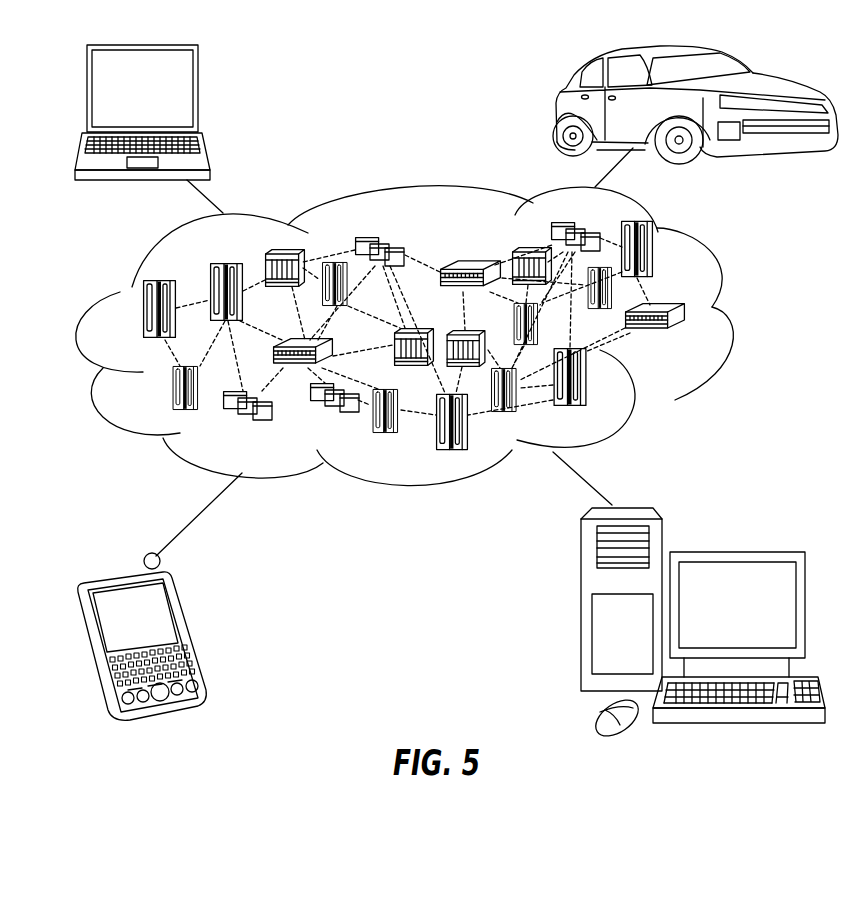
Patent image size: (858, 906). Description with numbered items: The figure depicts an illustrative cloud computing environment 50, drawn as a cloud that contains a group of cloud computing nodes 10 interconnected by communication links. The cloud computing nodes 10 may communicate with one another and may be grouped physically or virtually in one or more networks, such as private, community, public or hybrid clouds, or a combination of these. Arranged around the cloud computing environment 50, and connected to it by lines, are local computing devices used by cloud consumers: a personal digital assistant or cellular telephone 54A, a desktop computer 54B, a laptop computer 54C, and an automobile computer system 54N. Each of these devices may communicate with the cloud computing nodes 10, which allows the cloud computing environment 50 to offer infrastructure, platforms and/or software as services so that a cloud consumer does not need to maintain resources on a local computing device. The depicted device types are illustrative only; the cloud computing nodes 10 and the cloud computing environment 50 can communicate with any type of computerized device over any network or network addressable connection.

The cloud computing nodes 10 is at (690, 341).
The cloud computing environment 50 is at (737, 320).
The personal digital assistant or cellular telephone 54A is at (192, 630).
The desktop computer 54B is at (733, 552).
The laptop computer 54C is at (201, 98).
The automobile computer system 54N is at (553, 108).